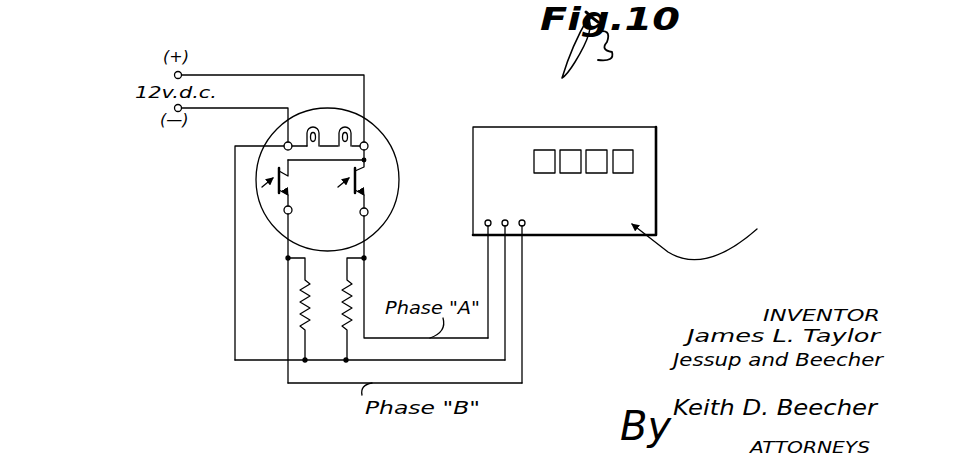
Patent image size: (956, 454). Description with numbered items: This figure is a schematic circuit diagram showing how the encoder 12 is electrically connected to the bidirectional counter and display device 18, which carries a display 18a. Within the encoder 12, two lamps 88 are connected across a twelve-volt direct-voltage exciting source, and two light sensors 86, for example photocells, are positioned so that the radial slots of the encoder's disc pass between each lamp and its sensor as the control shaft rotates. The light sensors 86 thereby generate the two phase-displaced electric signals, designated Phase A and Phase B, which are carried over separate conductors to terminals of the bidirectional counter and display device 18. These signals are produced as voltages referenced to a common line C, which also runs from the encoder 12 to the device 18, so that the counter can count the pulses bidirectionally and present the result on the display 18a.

The encoder 12 is at (278, 230).
The bidirectional counter and display device 18 is at (637, 183).
The display 18a is at (548, 150).
The light sensors 86 is at (340, 190).
The lamps 88 is at (316, 128).
The common line C is at (505, 328).